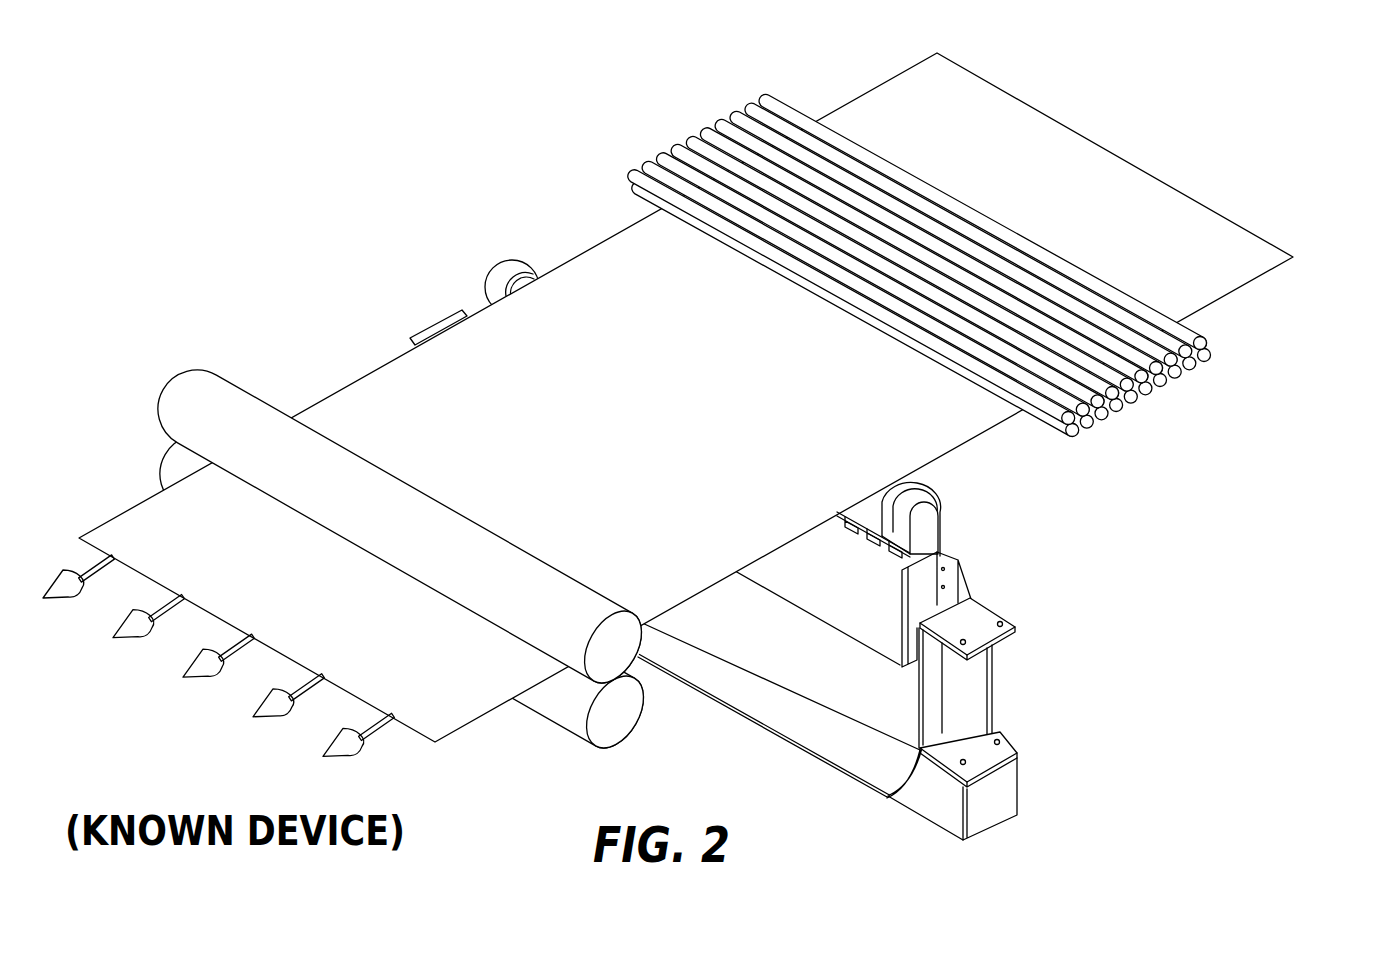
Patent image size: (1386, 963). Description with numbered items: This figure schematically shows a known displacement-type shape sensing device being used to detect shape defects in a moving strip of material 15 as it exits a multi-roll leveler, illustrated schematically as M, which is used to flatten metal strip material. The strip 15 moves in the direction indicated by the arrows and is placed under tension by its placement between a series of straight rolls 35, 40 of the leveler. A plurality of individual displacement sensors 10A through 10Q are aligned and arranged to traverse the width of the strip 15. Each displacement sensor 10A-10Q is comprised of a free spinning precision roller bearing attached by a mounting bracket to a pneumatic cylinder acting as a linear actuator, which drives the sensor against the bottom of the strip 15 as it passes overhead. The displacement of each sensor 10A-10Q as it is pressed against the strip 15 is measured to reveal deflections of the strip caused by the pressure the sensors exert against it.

The strip of material 15 is at (675, 409).
The straight roll 35 is at (183, 397).
The straight roll 40 is at (565, 712).
The displacement sensor 10A is at (492, 246).
The displacement sensor 10Q is at (960, 522).
The multi-roll leveler M is at (1228, 383).